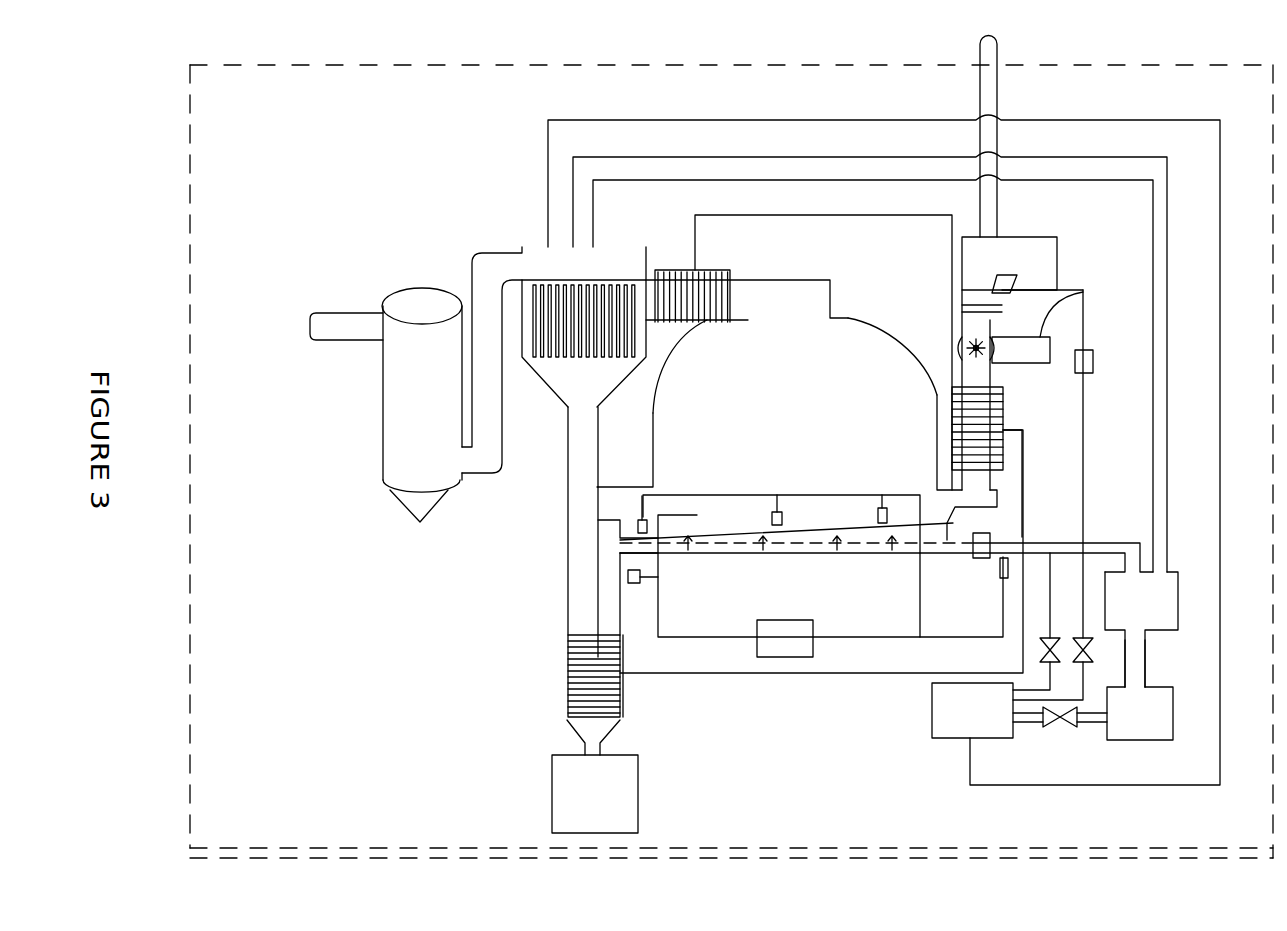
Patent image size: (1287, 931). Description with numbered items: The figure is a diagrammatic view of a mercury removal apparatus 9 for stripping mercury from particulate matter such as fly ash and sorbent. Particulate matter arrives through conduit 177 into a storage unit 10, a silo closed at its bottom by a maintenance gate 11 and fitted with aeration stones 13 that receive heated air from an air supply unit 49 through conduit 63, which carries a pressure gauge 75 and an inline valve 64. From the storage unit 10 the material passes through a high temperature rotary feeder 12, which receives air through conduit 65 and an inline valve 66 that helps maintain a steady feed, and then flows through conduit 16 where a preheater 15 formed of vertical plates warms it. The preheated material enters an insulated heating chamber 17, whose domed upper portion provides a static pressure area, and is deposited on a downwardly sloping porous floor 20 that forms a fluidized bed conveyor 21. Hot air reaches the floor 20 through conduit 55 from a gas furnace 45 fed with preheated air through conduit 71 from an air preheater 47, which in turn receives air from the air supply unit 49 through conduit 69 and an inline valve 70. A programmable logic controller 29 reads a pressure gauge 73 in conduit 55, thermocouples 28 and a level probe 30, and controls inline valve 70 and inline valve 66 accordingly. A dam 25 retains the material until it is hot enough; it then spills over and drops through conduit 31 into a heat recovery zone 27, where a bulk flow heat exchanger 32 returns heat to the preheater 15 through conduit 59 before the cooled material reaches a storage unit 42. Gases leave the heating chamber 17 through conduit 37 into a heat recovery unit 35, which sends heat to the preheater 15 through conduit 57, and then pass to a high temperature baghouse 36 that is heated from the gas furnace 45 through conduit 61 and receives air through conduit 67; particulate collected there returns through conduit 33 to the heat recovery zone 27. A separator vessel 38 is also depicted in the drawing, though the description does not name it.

The mercury removal apparatus 9 is at (499, 60).
The storage unit 10 is at (1005, 252).
The maintenance gate 11 is at (1006, 318).
The rotary feeder 12 is at (965, 349).
The aeration stones 13 is at (1012, 283).
The preheater 15 is at (1005, 412).
The conduit 16 is at (973, 377).
The insulated heating chamber 17 is at (897, 341).
The floor 20 is at (873, 548).
The fluidized bed conveyor 21 is at (922, 492).
The dam 25 is at (598, 520).
The heat recovery zone 27 is at (610, 617).
The thermocouples 28 is at (781, 511).
The programmable logic controller 29 is at (785, 638).
The level probe 30 is at (696, 521).
The conduit 31 is at (607, 565).
The bulk flow heat exchanger 32 is at (575, 676).
The conduit 33 is at (590, 443).
The heat recovery unit 35 is at (708, 270).
The high temperature baghouse 36 is at (582, 380).
The conduit 37 is at (766, 298).
The cyclone separator 38 is at (400, 458).
The storage unit 42 is at (640, 800).
The gas furnace 45 is at (1160, 600).
The air preheater 47 is at (1145, 725).
The air supply unit 49 is at (950, 707).
The conduit 55 is at (1108, 543).
The conduit 57 is at (908, 216).
The conduit 59 is at (745, 675).
The conduit 61 is at (1160, 212).
The conduit 63 is at (1085, 450).
The inline valve 64 is at (1098, 646).
The conduit 65 is at (1083, 292).
The inline valve 66 is at (1034, 650).
The conduit 67 is at (1090, 787).
The conduit 69 is at (1030, 722).
The inline valve 70 is at (1064, 734).
The conduit 71 is at (1137, 660).
The pressure gauge 73 is at (972, 548).
The pressure gauge 75 is at (1093, 362).
The conduit 177 is at (990, 52).